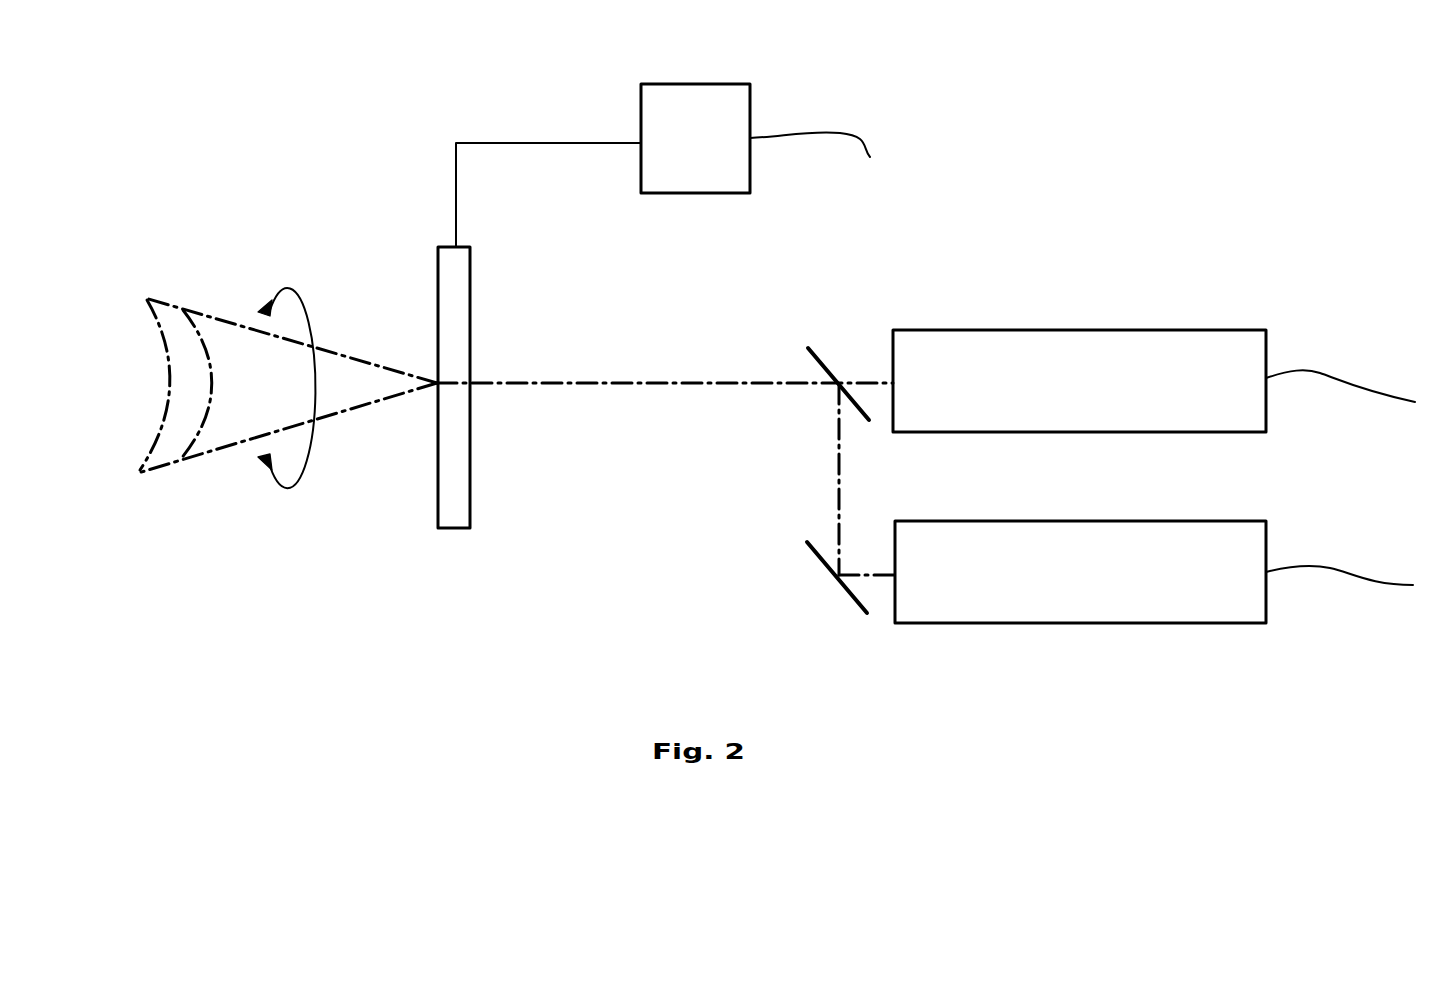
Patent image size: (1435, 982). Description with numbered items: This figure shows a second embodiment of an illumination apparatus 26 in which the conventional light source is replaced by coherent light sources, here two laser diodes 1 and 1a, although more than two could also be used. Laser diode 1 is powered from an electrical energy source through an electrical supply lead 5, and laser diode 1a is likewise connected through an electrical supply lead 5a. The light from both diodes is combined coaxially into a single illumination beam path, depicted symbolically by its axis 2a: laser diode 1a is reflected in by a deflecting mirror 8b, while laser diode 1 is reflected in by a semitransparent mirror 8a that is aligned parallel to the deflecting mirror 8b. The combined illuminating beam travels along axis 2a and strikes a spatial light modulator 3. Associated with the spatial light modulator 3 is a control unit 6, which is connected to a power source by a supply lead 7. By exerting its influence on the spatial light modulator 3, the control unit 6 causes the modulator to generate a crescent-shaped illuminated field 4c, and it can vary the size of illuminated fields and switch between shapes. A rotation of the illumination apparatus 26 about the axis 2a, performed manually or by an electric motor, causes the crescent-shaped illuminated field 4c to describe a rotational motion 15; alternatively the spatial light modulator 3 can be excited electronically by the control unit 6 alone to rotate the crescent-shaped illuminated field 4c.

The laser diode 1 is at (1078, 363).
The laser diode 1a is at (1078, 570).
The axis 2a is at (670, 386).
The spatial light modulator 3 is at (455, 516).
The crescent-shaped illuminated field 4c is at (183, 407).
The electrical supply lead 5 is at (1337, 374).
The electrical supply lead 5a is at (1362, 573).
The control unit 6 is at (715, 103).
The supply lead 7 is at (839, 135).
The semitransparent mirror 8a is at (838, 360).
The deflecting mirror 8b is at (817, 553).
The rotational motion 15 is at (287, 485).
The illumination apparatus 26 is at (955, 190).